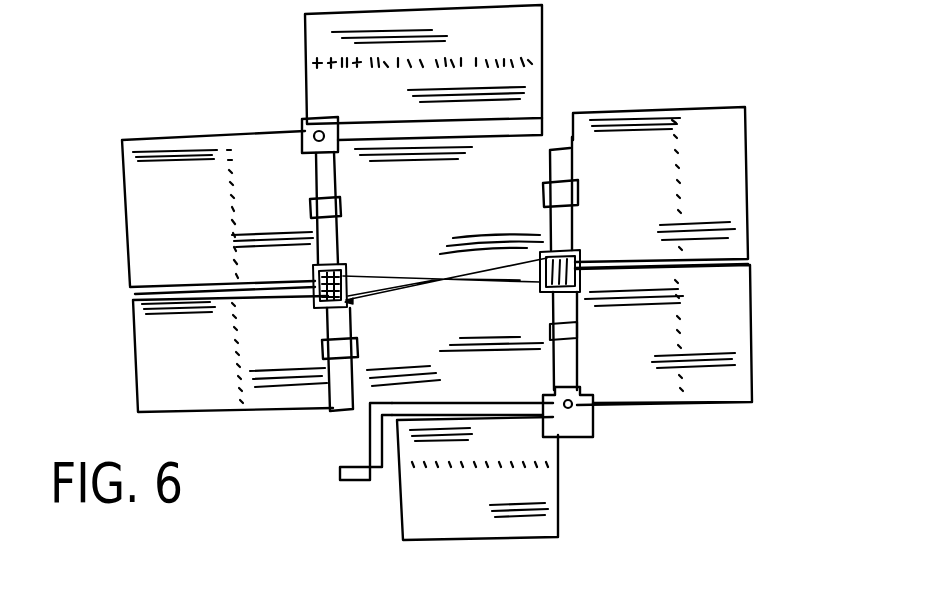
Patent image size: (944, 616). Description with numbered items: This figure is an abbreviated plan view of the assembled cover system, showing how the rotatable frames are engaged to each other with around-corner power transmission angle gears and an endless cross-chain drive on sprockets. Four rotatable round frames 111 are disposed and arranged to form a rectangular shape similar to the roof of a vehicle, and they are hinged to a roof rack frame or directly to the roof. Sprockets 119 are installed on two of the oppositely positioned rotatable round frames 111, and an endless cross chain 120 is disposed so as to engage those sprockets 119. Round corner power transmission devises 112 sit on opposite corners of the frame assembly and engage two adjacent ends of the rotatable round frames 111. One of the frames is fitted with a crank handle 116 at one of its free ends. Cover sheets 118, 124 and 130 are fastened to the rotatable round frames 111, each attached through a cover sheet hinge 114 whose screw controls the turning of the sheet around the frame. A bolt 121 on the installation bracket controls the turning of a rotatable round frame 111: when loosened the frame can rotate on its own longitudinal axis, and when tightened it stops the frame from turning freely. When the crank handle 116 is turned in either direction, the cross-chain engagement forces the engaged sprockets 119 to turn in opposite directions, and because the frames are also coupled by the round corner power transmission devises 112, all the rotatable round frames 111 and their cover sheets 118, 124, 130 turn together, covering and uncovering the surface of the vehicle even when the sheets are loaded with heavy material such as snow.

The rotatable round frame 111 is at (555, 162).
The round corner power transmission devise 112 is at (317, 136).
The cover sheet hinge 114 is at (336, 350).
The crank handle 116 is at (360, 470).
The cover sheet 118 is at (172, 202).
The sprocket 119 is at (580, 278).
The endless cross chain 120 is at (520, 280).
The bolt 121 is at (585, 192).
The cover sheet 124 is at (527, 478).
The cover sheet 130 is at (525, 64).